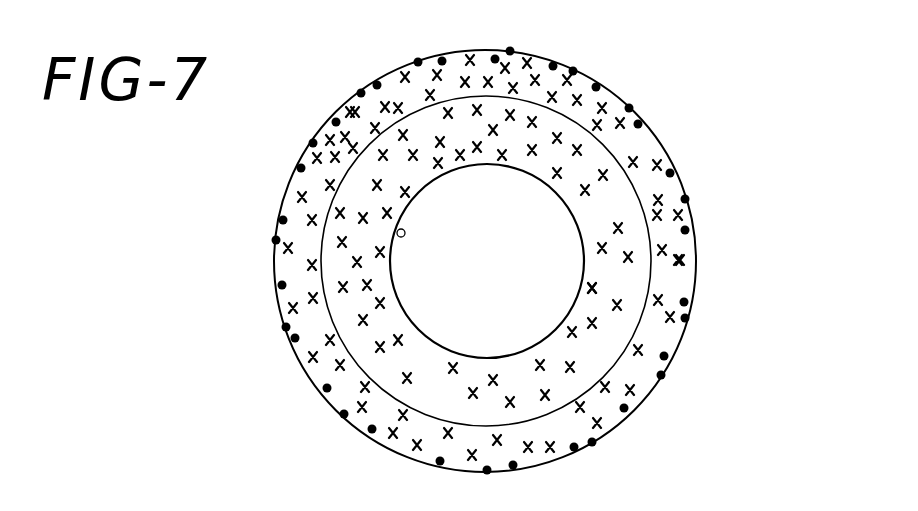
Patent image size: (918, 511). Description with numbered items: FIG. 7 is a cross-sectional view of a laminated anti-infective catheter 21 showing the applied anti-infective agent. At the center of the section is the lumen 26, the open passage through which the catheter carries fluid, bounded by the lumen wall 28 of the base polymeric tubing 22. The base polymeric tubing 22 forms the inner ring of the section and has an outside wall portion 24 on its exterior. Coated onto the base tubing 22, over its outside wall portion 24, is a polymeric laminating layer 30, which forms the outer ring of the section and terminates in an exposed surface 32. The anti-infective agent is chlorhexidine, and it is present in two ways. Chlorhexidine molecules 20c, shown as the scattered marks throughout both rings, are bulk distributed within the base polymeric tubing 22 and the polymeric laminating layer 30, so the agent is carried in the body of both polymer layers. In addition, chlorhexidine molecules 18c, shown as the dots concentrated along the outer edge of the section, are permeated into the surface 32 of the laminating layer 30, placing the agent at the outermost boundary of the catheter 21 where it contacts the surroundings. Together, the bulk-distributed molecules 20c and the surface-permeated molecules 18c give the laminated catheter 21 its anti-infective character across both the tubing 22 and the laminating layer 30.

The chlorhexidine molecules 18c is at (575, 70).
The chlorhexidine molecules 20c is at (350, 112).
The catheter 21 is at (710, 209).
The base polymeric tubing 22 is at (390, 368).
The outside wall portion 24 is at (320, 287).
The lumen 26 is at (437, 303).
The lumen wall 28 is at (398, 231).
The polymeric laminating layer 30 is at (635, 145).
The surface 32 is at (612, 90).